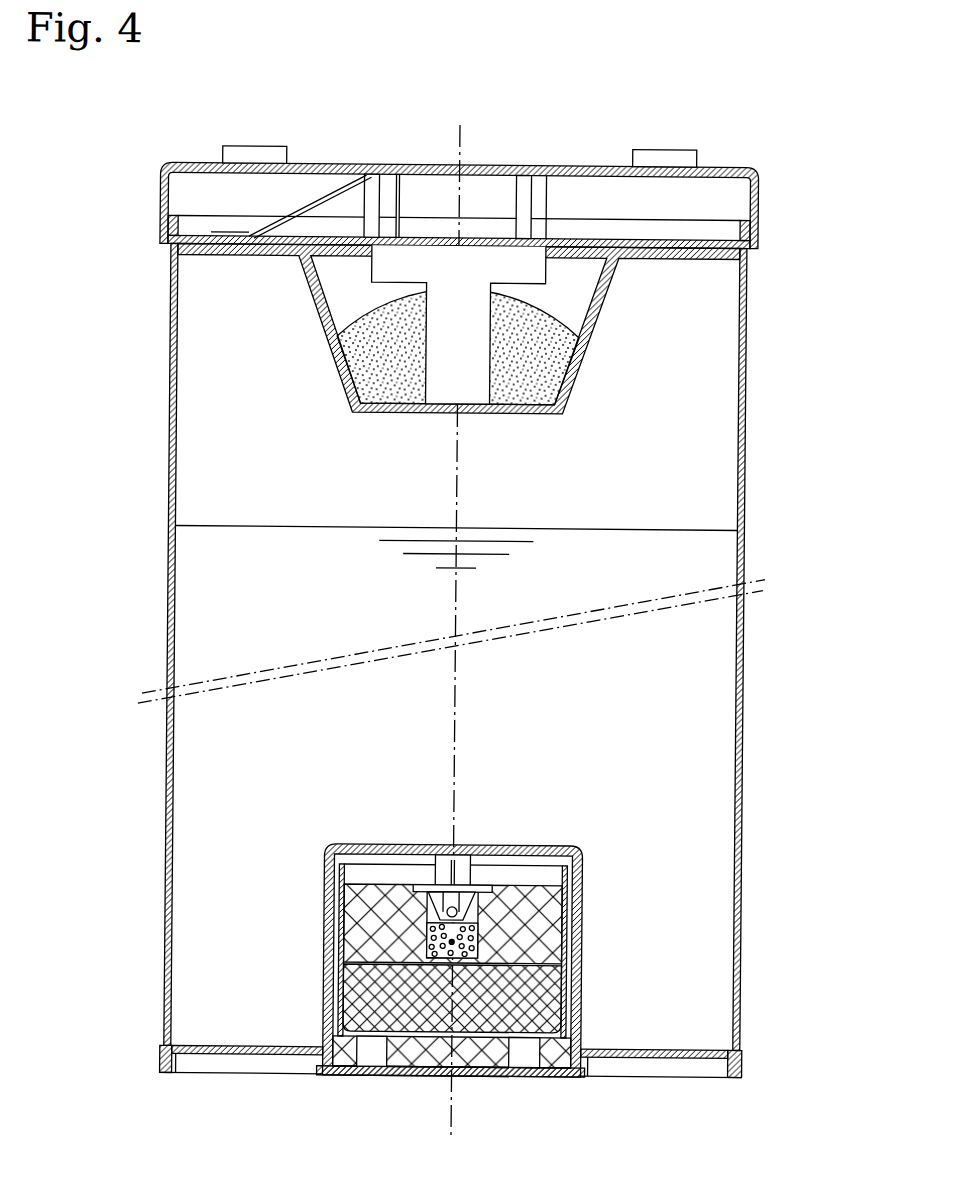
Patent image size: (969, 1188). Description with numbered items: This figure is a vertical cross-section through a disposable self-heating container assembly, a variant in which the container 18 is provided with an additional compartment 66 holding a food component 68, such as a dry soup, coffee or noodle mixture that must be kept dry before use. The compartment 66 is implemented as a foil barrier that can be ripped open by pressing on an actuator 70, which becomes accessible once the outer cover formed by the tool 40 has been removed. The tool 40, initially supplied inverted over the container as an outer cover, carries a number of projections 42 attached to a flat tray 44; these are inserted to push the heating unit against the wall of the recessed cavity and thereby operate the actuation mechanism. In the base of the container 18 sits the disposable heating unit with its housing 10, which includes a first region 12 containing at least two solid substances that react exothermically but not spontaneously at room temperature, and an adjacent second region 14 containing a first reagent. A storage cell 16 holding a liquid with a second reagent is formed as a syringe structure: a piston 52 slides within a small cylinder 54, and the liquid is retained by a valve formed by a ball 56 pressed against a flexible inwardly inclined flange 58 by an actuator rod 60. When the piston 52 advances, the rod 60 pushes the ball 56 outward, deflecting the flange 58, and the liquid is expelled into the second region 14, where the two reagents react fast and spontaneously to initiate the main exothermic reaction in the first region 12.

The housing 10 is at (587, 1020).
The first region 12 is at (547, 928).
The second region 14 is at (447, 955).
The storage cell 16 is at (430, 878).
The container 18 is at (748, 498).
The tool 40 is at (762, 170).
The projections 42 is at (537, 190).
The flat tray 44 is at (323, 165).
The piston 52 is at (469, 873).
The small cylinder 54 is at (479, 883).
The ball 56 is at (483, 891).
The flexible inwardly inclined flange 58 is at (477, 925).
The actuator rod 60 is at (487, 913).
The additional compartment 66 is at (590, 337).
The food component 68 is at (535, 375).
The actuator 70 is at (523, 270).